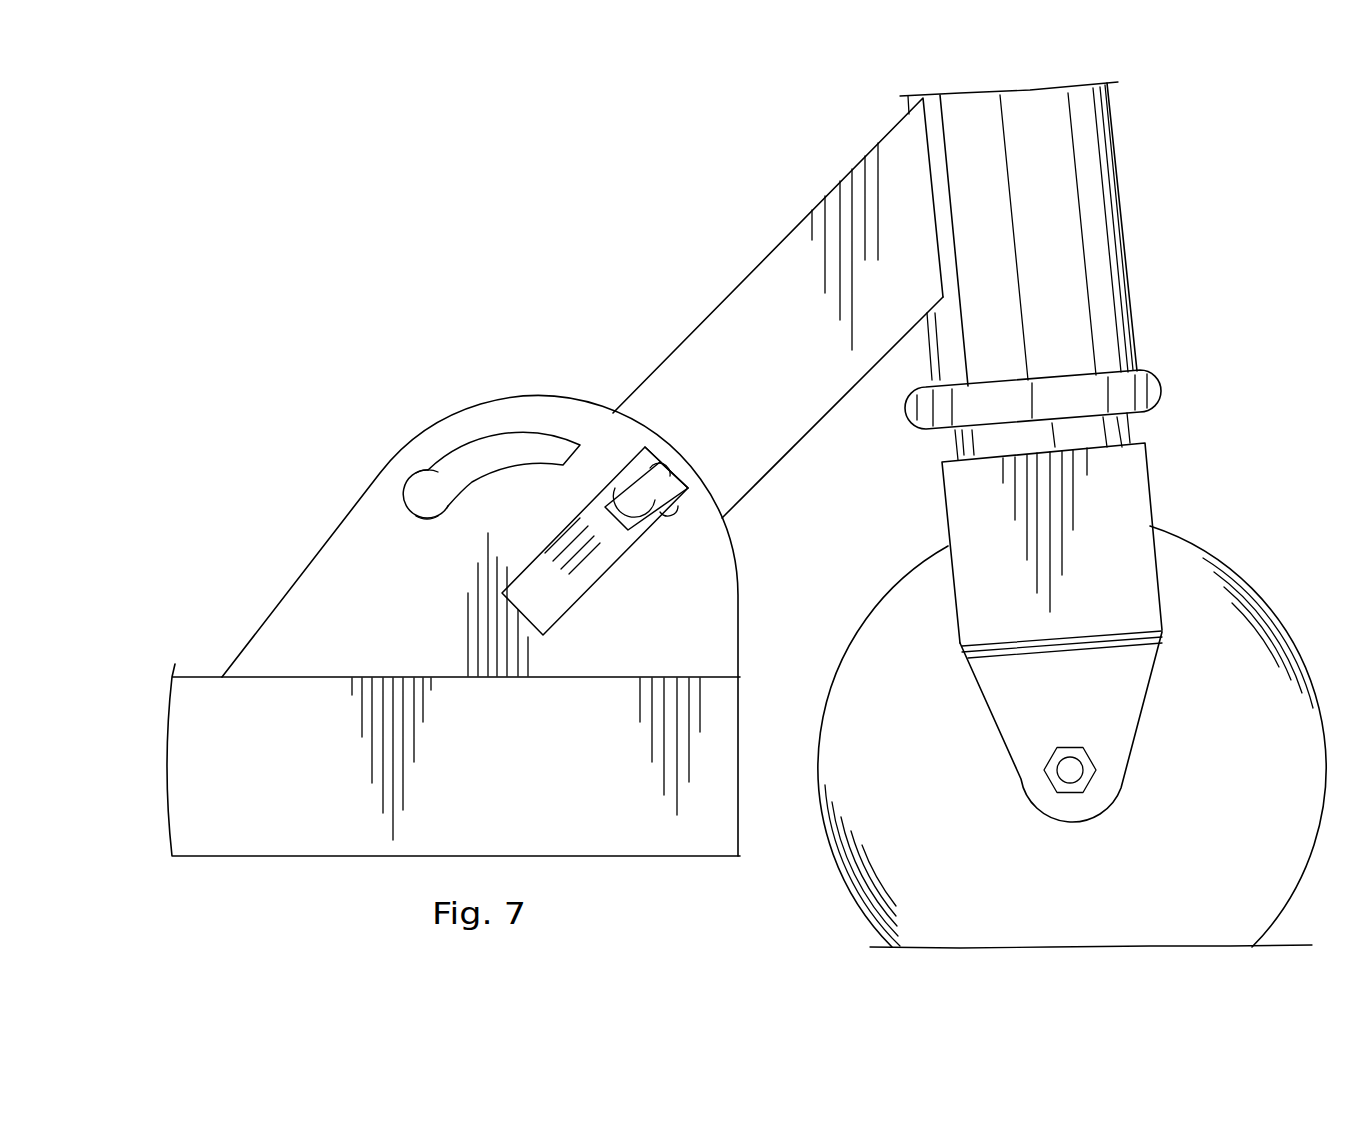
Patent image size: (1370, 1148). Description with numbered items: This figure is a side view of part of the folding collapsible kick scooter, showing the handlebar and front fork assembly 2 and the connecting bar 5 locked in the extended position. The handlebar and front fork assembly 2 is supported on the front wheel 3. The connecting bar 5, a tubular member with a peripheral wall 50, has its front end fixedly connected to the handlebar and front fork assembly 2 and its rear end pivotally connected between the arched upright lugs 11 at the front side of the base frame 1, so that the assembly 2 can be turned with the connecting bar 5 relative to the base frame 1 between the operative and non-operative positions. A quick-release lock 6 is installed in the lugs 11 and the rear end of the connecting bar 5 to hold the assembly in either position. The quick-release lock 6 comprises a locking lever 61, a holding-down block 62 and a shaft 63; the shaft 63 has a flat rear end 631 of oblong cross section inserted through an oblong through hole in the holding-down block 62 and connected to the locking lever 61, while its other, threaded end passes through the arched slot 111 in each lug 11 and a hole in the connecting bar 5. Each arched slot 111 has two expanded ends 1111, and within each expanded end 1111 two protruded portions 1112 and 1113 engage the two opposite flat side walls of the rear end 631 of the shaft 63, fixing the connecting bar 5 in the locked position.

The base frame 1 is at (204, 665).
The arched upright lug 11 is at (330, 537).
The arched slot 111 is at (530, 433).
The expanded end 1111 is at (403, 490).
The protruded portion 1112 is at (428, 470).
The protruded portion 1113 is at (428, 519).
The handlebar and front fork assembly 2 is at (1141, 212).
The front wheel 3 is at (1240, 552).
The connecting bar 5 is at (766, 233).
The peripheral wall 50 is at (842, 400).
The quick-release lock 6 is at (672, 453).
The locking lever 61 is at (562, 603).
The holding-down block 62 is at (660, 527).
The shaft 63 is at (648, 490).
The rear end of the shaft 631 is at (632, 480).